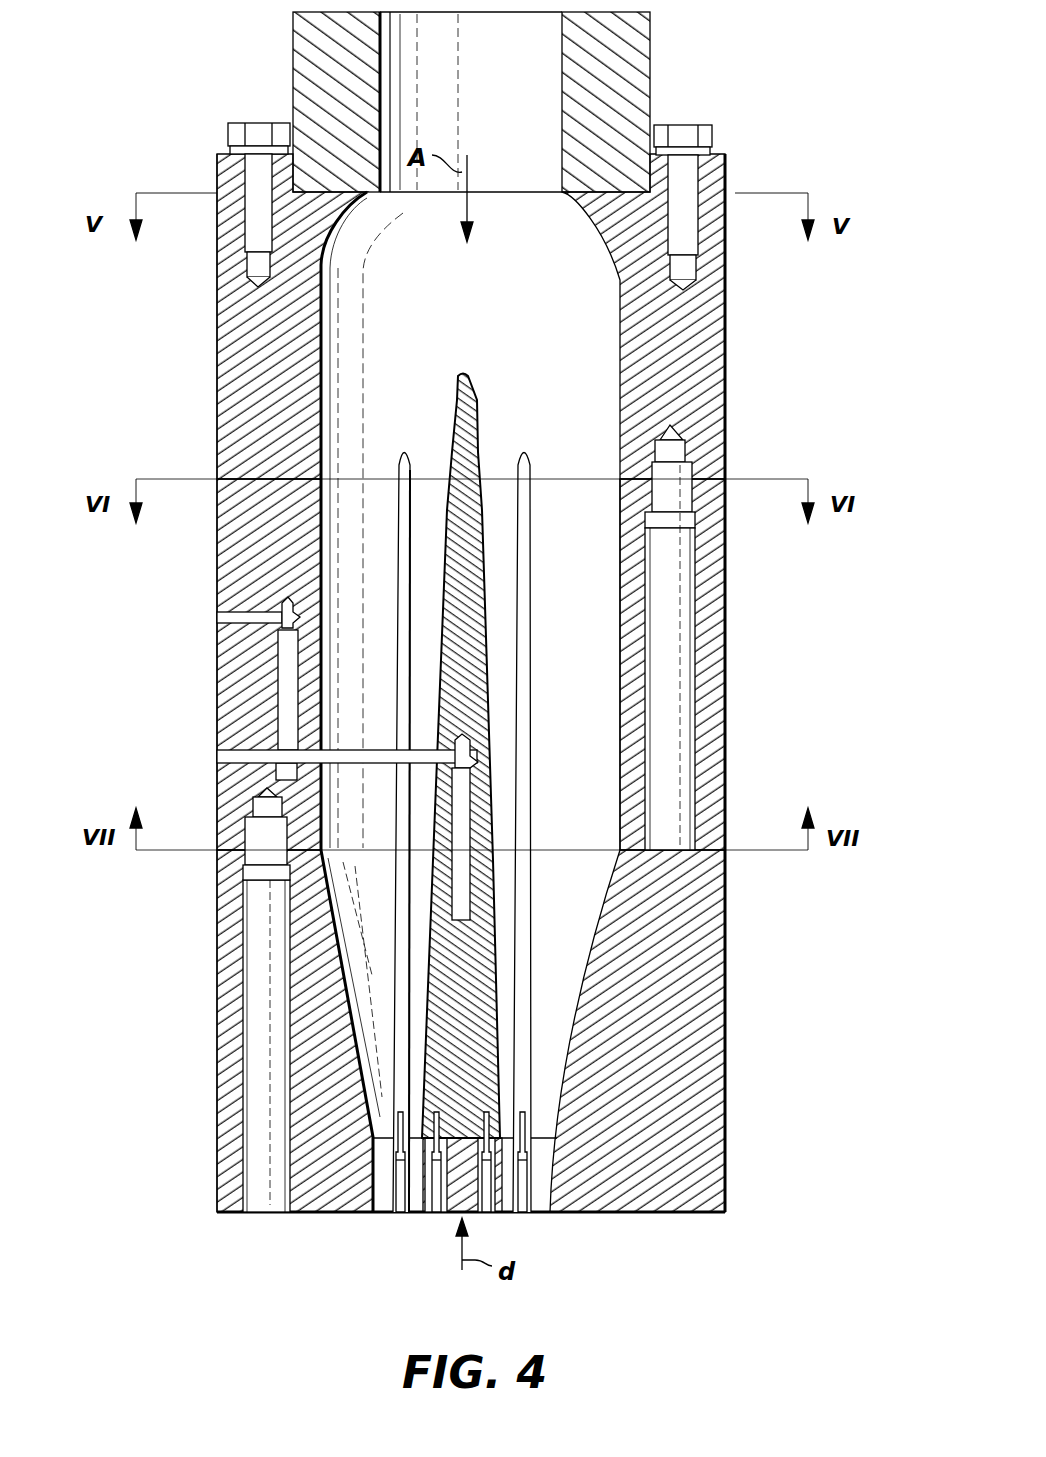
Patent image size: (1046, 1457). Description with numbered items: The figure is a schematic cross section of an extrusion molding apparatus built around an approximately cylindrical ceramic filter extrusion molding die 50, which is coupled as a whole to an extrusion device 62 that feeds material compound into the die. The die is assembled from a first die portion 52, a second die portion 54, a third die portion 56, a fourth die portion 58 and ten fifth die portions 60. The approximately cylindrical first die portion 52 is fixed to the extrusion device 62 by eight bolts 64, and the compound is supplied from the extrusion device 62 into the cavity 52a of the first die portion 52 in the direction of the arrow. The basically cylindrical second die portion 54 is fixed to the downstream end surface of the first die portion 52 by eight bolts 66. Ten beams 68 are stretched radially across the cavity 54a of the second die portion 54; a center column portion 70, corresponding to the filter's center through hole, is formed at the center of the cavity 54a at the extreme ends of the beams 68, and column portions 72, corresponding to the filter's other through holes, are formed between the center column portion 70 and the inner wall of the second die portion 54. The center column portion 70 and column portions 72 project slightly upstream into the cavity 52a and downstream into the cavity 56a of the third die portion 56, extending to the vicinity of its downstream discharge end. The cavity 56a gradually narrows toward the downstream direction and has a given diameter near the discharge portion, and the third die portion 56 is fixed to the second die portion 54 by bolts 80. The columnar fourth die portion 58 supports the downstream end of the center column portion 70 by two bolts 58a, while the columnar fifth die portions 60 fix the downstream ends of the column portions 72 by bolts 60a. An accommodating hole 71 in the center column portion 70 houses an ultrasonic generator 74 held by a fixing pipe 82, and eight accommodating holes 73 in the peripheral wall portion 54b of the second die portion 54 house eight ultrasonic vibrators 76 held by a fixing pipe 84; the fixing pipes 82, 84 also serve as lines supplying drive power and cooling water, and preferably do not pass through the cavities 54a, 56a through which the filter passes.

The molding die 50 is at (785, 461).
The first die portion 52 is at (233, 344).
The cavity of the first die portion 52a is at (585, 347).
The second die portion 54 is at (705, 680).
The cavity of the second die portion 54a is at (585, 757).
The peripheral wall portion 54b is at (238, 548).
The third die portion 56 is at (707, 1093).
The cavity of the third die portion 56a is at (565, 965).
The fourth die portion 58 is at (493, 1213).
The bolts 58a is at (482, 1104).
The fifth die portions 60 is at (405, 1213).
The bolts 60a is at (475, 1137).
The extrusion device 62 is at (610, 48).
The bolts 64 is at (260, 128).
The bolts 66 is at (675, 478).
The beams 68 is at (568, 479).
The center column portion 70 is at (473, 1060).
The accommodating hole 71 is at (480, 822).
The column portions 72 is at (398, 1053).
The accommodating holes 73 is at (285, 680).
The ultrasonic generator 74 is at (457, 903).
The ultrasonic vibrators 76 is at (283, 712).
The bolts 80 is at (258, 858).
The fixing pipe 82 is at (262, 748).
The fixing pipe 84 is at (262, 612).